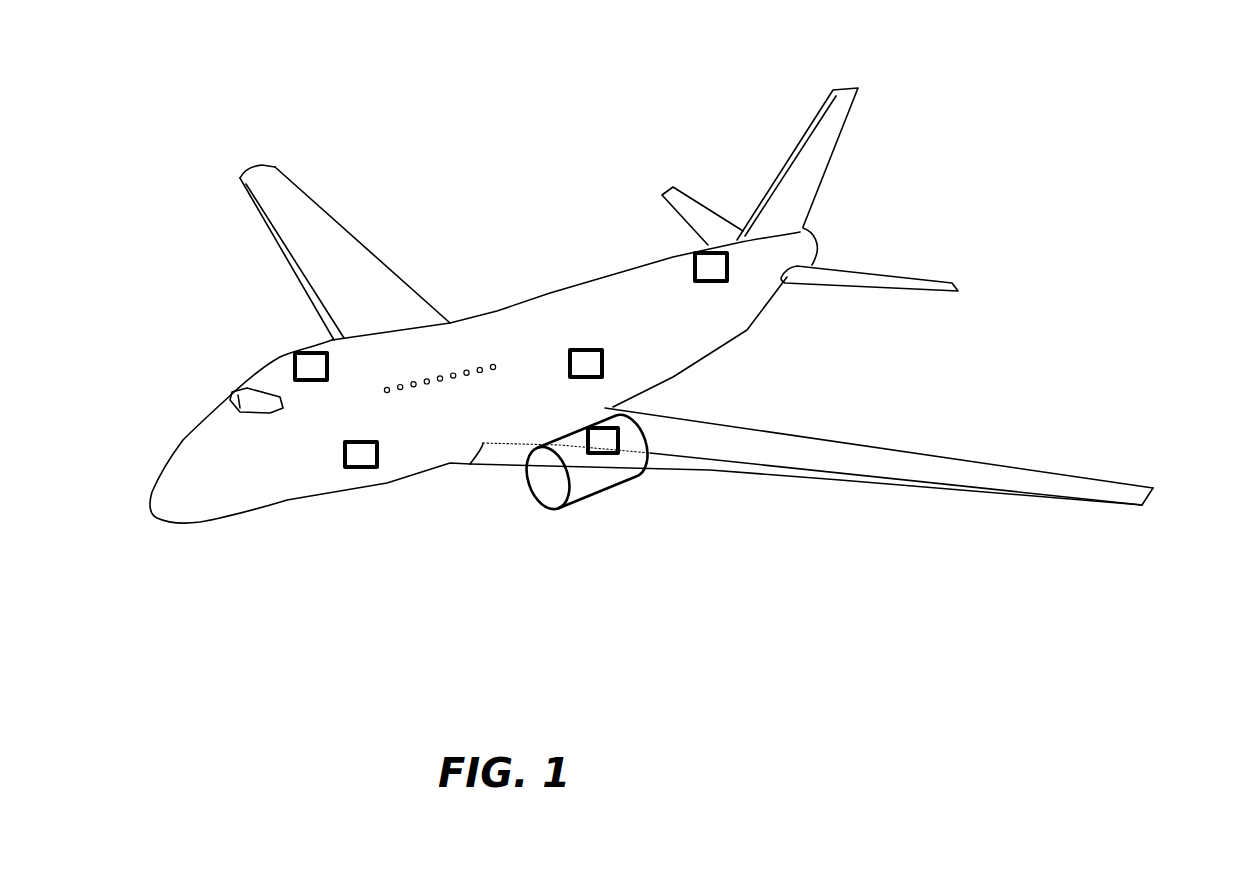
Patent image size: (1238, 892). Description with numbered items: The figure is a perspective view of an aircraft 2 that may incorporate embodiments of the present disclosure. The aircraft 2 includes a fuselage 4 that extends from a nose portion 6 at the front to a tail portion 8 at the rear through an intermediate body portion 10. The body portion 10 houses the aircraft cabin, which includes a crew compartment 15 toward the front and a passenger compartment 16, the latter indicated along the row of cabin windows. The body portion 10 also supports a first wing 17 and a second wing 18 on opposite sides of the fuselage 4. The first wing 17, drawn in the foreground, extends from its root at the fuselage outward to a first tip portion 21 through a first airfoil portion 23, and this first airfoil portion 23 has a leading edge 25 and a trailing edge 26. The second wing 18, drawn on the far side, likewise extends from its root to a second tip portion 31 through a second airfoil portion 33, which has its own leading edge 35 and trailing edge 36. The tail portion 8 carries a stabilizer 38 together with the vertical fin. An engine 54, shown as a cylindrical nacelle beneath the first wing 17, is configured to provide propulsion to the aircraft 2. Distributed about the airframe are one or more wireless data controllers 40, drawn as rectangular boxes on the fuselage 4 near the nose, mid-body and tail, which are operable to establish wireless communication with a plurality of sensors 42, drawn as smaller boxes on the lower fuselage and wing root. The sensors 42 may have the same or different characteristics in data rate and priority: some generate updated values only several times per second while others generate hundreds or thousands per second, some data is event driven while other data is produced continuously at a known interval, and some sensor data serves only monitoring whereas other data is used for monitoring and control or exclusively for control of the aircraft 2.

The aircraft 2 is at (656, 336).
The fuselage 4 is at (465, 380).
The nose portion 6 is at (153, 500).
The tail portion 8 is at (810, 213).
The body portion 10 is at (662, 372).
The crew compartment 15 is at (230, 383).
The passenger compartment 16 is at (356, 236).
The first wing 17 is at (837, 472).
The second wing 18 is at (283, 178).
The first tip portion 21 is at (1157, 493).
The first airfoil portion 23 is at (723, 430).
The leading edge 25 is at (645, 472).
The trailing edge 26 is at (855, 442).
The second tip portion 31 is at (250, 167).
The second airfoil portion 33 is at (305, 212).
The leading edge 35 is at (245, 198).
The trailing edge 36 is at (330, 213).
The stabilizer 38 is at (853, 256).
The wireless data controller 40 is at (300, 353).
The sensor 42 is at (363, 467).
The engine 54 is at (533, 487).